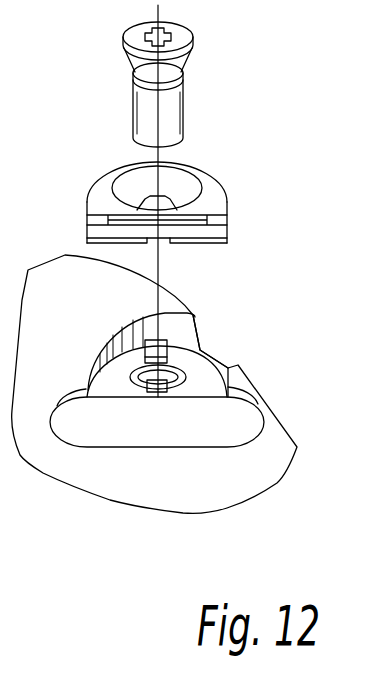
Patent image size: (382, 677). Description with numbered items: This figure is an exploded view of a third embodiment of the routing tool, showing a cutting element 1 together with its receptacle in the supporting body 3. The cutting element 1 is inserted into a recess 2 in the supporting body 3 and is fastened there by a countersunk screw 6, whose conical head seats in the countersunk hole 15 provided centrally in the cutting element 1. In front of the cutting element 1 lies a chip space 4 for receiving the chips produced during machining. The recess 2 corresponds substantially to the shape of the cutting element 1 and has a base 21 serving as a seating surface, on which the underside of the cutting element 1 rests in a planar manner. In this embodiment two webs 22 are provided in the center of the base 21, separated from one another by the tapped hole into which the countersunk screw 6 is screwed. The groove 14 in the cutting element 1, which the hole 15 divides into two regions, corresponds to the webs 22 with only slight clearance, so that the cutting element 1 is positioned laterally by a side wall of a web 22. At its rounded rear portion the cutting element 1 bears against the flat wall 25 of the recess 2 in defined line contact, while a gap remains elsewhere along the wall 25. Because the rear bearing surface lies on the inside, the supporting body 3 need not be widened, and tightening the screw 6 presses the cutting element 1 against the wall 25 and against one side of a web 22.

The cutting element 1 is at (210, 203).
The recess 2 is at (117, 387).
The supporting body 3 is at (66, 326).
The chip space 4 is at (240, 427).
The countersunk screw 6 is at (172, 115).
The groove 14 is at (163, 246).
The countersunk hole 15 is at (177, 187).
The base 21 is at (200, 383).
The web 22 is at (160, 336).
The wall 25 is at (158, 325).